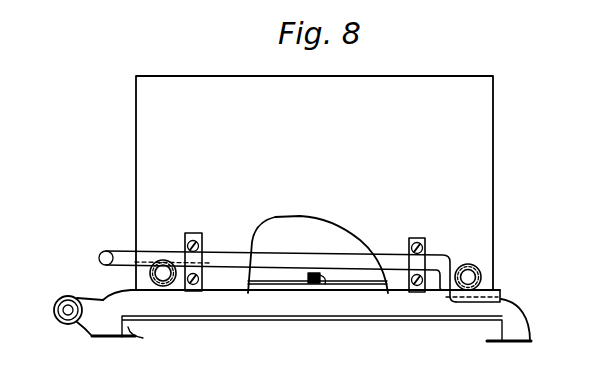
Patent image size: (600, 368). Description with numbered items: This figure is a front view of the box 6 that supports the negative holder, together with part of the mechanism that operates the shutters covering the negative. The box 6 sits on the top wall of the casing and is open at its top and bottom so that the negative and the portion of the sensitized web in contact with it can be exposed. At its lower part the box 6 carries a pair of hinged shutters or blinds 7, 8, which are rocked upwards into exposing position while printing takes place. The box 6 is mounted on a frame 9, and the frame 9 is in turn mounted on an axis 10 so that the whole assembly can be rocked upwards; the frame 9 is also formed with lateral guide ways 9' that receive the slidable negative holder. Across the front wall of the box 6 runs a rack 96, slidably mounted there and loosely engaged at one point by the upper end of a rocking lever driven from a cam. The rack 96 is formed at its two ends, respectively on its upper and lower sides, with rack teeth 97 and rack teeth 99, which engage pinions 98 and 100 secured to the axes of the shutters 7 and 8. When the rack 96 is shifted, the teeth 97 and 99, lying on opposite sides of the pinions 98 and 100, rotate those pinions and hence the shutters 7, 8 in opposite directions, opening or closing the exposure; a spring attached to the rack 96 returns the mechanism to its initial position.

The box 6 is at (493, 196).
The hinged shutter 7 is at (290, 274).
The hinged shutter 8 is at (358, 273).
The frame 9 is at (311, 321).
The lateral guide way 9' is at (143, 339).
The axis 10 is at (64, 313).
The rack 96 is at (231, 262).
The rack teeth 97 is at (176, 262).
The pinion 98 is at (162, 288).
The rack teeth 99 is at (489, 289).
The pinion 100 is at (483, 253).